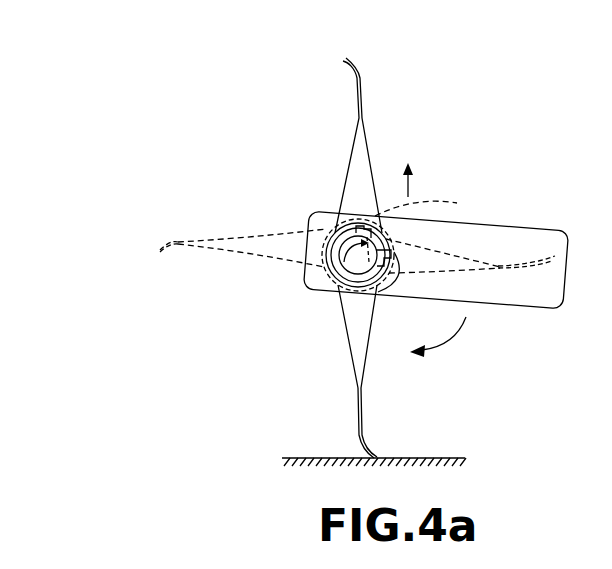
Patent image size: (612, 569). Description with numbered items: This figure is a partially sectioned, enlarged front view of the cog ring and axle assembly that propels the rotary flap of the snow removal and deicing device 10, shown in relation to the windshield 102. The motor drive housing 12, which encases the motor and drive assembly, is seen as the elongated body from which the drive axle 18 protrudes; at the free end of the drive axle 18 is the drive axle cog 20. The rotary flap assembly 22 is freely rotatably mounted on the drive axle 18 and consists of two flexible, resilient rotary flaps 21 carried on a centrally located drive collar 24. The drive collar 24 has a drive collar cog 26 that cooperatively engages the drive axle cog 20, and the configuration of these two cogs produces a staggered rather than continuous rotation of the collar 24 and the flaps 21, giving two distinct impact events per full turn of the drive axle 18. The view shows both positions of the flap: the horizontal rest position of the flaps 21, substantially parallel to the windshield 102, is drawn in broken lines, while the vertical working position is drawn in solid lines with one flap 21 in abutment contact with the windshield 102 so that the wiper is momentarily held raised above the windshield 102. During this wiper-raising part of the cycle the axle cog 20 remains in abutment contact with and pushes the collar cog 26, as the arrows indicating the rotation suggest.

The snow removal and deicing device 10 is at (236, 340).
The motor drive housing 12 is at (537, 226).
The drive axle 18 is at (336, 274).
The drive axle cog 20 is at (411, 250).
The rotary flap 21 is at (356, 77).
The rotary flap assembly 22 is at (388, 151).
The drive collar 24 is at (330, 246).
The drive collar cog 26 is at (383, 297).
The windshield 102 is at (432, 458).